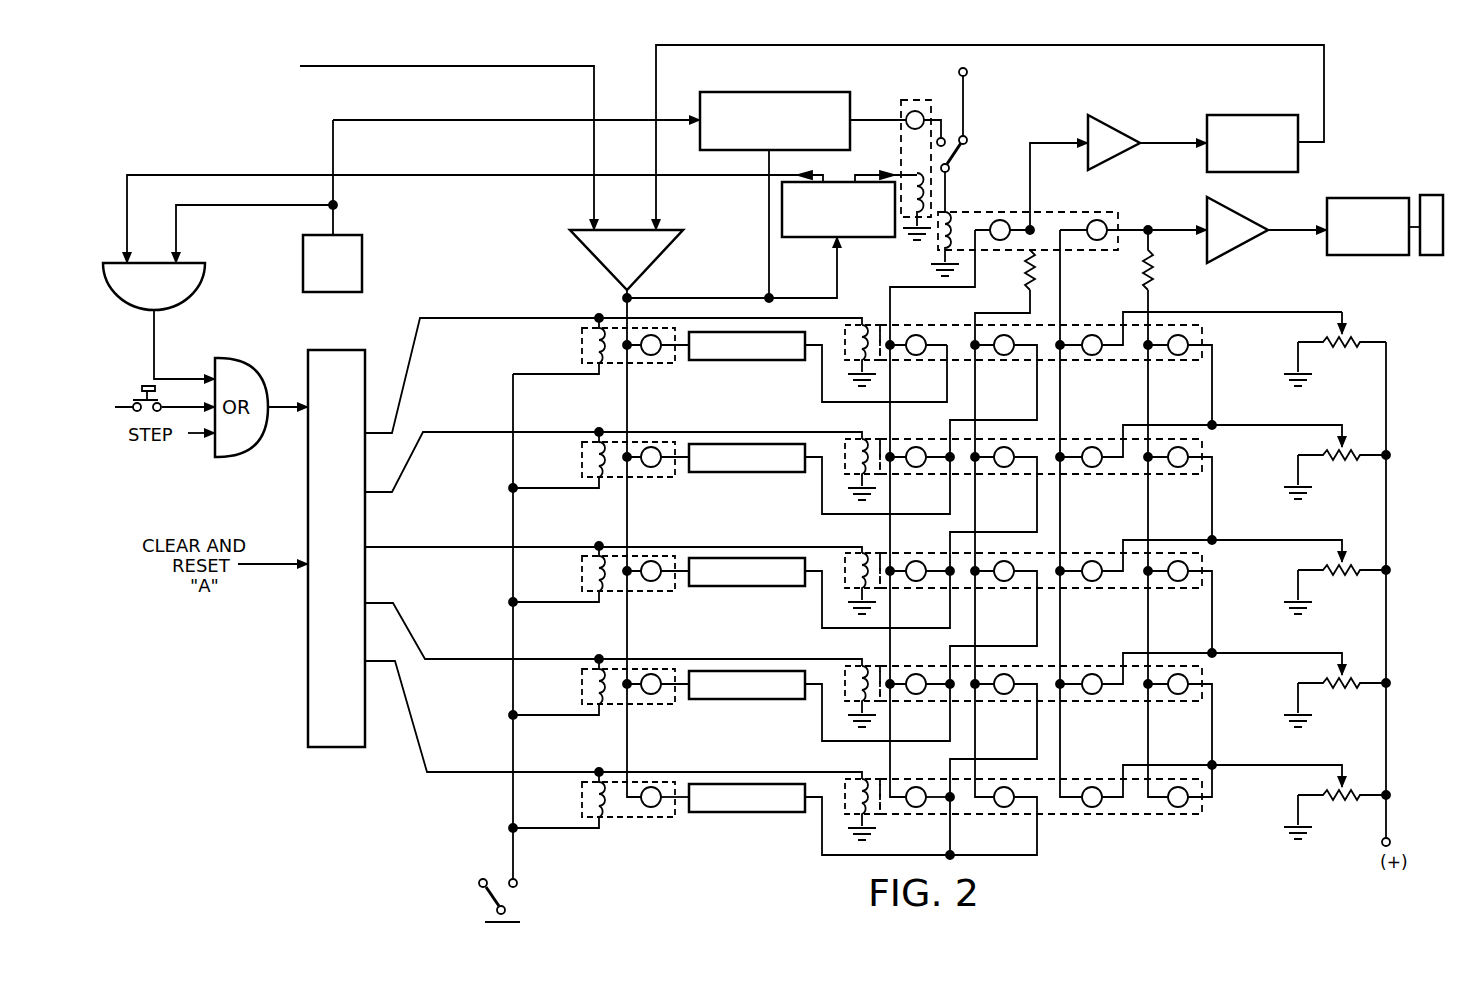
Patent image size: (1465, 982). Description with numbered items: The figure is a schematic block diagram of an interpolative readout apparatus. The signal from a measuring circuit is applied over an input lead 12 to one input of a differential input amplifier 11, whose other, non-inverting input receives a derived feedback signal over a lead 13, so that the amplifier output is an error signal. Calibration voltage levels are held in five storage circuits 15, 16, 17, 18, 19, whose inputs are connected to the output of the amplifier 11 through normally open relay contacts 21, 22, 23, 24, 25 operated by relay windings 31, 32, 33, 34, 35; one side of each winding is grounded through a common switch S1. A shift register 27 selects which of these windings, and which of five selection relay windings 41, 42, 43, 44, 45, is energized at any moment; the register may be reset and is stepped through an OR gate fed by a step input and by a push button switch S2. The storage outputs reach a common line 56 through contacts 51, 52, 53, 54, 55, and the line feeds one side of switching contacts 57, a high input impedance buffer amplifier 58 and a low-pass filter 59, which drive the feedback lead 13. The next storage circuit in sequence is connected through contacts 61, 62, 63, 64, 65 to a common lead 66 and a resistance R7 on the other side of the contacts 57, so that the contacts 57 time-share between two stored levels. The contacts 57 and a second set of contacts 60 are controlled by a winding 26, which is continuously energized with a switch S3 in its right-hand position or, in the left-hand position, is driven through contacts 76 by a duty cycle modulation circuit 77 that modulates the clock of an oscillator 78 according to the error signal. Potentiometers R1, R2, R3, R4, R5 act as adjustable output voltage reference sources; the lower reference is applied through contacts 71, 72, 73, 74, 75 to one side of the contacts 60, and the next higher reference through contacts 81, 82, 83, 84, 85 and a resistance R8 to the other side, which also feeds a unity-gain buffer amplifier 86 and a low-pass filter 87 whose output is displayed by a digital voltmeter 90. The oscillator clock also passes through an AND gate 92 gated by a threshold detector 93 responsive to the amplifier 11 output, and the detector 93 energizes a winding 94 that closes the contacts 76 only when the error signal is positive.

The differential input amplifier 11 is at (600, 266).
The input signal lead 12 is at (594, 98).
The feedback lead 13 is at (656, 92).
The storage circuit 15 is at (764, 360).
The storage circuit 16 is at (764, 472).
The storage circuit 17 is at (764, 586).
The storage circuit 18 is at (764, 699).
The storage circuit 19 is at (764, 812).
The relay contacts 21 is at (656, 357).
The relay contacts 22 is at (656, 469).
The relay contacts 23 is at (656, 583).
The relay contacts 24 is at (656, 696).
The relay contacts 25 is at (656, 809).
The relay winding 26 is at (950, 214).
The shift register 27 is at (308, 653).
The relay winding 31 is at (608, 366).
The relay winding 32 is at (608, 480).
The relay winding 33 is at (608, 594).
The relay winding 34 is at (608, 707).
The relay winding 35 is at (608, 820).
The selection relay winding 41 is at (868, 326).
The selection relay winding 42 is at (872, 440).
The selection relay winding 43 is at (872, 554).
The selection relay winding 44 is at (872, 667).
The selection relay winding 45 is at (872, 780).
The relay contacts 51 is at (920, 357).
The relay contacts 52 is at (920, 469).
The relay contacts 53 is at (920, 583).
The relay contacts 54 is at (920, 696).
The relay contacts 55 is at (920, 809).
The common line 56 is at (886, 302).
The relay contacts 57 is at (1004, 220).
The buffer amplifier 58 is at (1135, 128).
The low-pass filter 59 is at (1278, 115).
The relay contacts 60 is at (1106, 222).
The relay contacts 61 is at (1008, 357).
The relay contacts 62 is at (1008, 469).
The relay contacts 63 is at (1008, 583).
The relay contacts 64 is at (1008, 696).
The relay contacts 65 is at (1008, 809).
The common lead 66 is at (1000, 312).
The relay contacts 71 is at (1096, 357).
The relay contacts 72 is at (1096, 469).
The relay contacts 73 is at (1096, 583).
The relay contacts 74 is at (1096, 696).
The relay contacts 75 is at (1096, 809).
The relay contacts 76 is at (920, 110).
The duty cycle modulation circuit 77 is at (818, 92).
The oscillator 78 is at (362, 256).
The relay contacts 81 is at (1182, 357).
The relay contacts 82 is at (1182, 469).
The relay contacts 83 is at (1182, 583).
The relay contacts 84 is at (1182, 696).
The relay contacts 85 is at (1182, 809).
The buffer amplifier 86 is at (1276, 206).
The low-pass filter 87 is at (1366, 198).
The digital voltmeter 90 is at (1434, 195).
The AND gate 92 is at (198, 283).
The threshold detector 93 is at (818, 237).
The relay winding 94 is at (916, 170).
The potentiometer R1 is at (1335, 349).
The potentiometer R2 is at (1332, 464).
The potentiometer R3 is at (1332, 579).
The potentiometer R4 is at (1332, 692).
The potentiometer R5 is at (1332, 804).
The resistance R7 is at (1026, 280).
The resistance R8 is at (1151, 280).
The common switch S1 is at (490, 896).
The push button switch S2 is at (140, 386).
The switch S3 is at (958, 156).